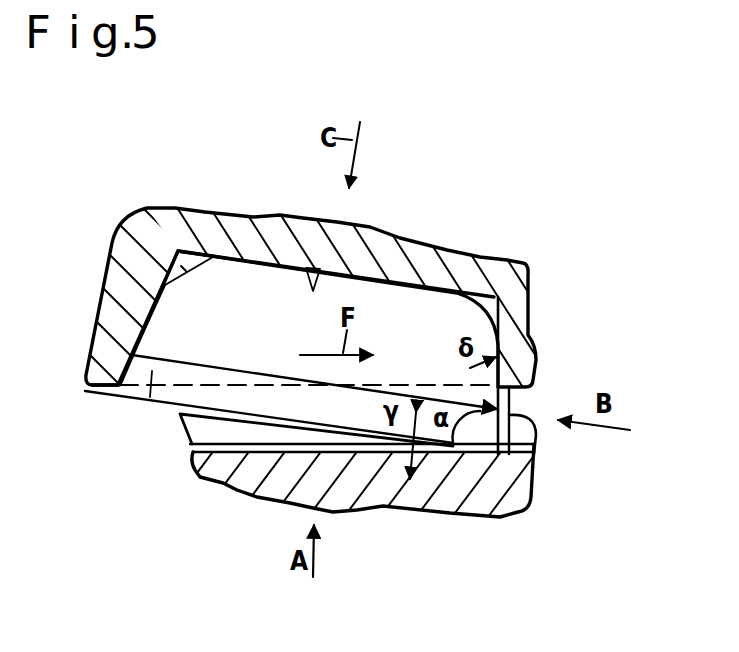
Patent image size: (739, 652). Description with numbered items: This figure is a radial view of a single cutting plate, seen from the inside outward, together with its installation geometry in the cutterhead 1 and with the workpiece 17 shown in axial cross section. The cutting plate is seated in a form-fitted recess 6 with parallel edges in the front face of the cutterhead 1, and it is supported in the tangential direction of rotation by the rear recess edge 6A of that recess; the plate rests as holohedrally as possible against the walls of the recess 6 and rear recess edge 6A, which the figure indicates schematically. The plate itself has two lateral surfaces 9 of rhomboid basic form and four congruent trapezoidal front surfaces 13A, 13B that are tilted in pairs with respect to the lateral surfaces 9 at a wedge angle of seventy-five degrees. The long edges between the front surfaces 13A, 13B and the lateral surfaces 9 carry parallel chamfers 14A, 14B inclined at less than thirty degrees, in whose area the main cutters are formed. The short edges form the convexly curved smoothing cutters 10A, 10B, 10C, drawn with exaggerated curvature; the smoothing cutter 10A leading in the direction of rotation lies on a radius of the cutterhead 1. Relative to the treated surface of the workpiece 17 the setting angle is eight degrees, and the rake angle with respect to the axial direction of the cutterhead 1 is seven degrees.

The cutterhead 1 is at (265, 232).
The recess 6 is at (257, 283).
The rear recess edge 6A is at (160, 328).
The lateral surface 9 is at (392, 282).
The smoothing cutter 10A is at (501, 452).
The smoothing cutter 10B is at (120, 385).
The smoothing cutter 10C is at (311, 285).
The front surface 13A is at (430, 307).
The front surface 13B is at (155, 306).
The chamfer 14A is at (152, 374).
The chamfer 14B is at (178, 251).
The workpiece 17 is at (383, 483).